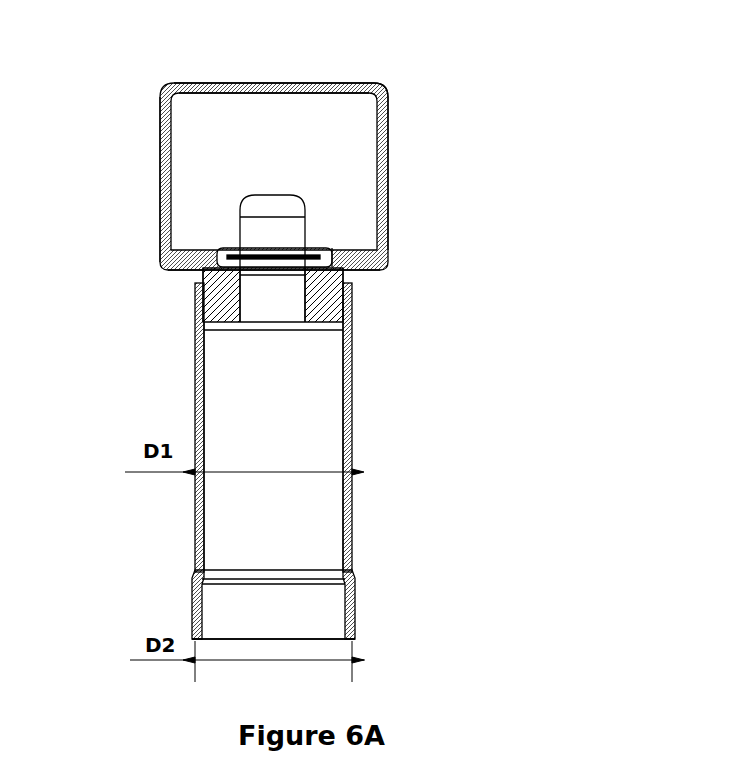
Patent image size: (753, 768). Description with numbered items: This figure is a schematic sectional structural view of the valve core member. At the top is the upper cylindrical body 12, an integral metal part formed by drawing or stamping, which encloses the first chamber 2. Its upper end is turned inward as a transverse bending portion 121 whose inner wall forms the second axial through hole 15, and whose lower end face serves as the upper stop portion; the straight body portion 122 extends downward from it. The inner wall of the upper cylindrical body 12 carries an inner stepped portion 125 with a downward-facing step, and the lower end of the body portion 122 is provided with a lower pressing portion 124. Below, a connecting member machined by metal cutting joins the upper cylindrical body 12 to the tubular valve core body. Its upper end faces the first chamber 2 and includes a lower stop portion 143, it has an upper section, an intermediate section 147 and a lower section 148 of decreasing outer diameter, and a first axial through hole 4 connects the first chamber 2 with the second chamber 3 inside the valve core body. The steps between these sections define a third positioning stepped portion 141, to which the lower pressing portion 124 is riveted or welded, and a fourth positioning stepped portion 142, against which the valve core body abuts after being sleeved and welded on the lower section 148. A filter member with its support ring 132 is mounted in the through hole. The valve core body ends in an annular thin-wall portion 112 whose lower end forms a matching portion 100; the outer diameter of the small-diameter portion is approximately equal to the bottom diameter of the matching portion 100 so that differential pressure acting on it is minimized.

The upper cylindrical body 12 is at (340, 151).
The second axial through hole 15 is at (274, 48).
The transverse bending portion 121 is at (403, 54).
The body portion 122 is at (424, 165).
The inner stepped portion 125 is at (124, 179).
The lower pressing portion 124 is at (236, 296).
The first chamber 2 is at (232, 121).
The support ring 132 is at (194, 267).
The lower stop portion 143 is at (396, 201).
The intermediate section 147 is at (410, 254).
The lower section 148 is at (401, 291).
The third positioning stepped portion 141 is at (155, 318).
The fourth positioning stepped portion 142 is at (161, 348).
The first axial through hole 4 is at (335, 304).
The second chamber 3 is at (317, 446).
The annular thin-wall portion 112 is at (328, 580).
The matching portion 100 is at (328, 658).